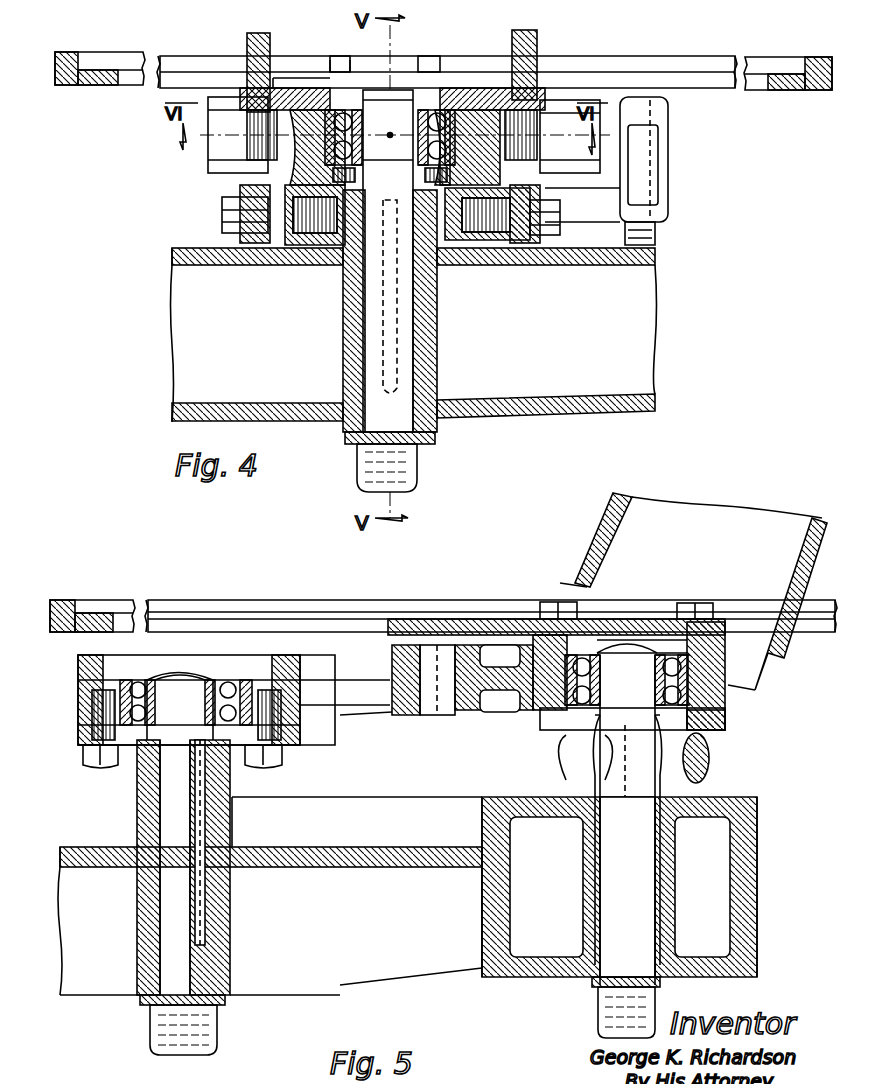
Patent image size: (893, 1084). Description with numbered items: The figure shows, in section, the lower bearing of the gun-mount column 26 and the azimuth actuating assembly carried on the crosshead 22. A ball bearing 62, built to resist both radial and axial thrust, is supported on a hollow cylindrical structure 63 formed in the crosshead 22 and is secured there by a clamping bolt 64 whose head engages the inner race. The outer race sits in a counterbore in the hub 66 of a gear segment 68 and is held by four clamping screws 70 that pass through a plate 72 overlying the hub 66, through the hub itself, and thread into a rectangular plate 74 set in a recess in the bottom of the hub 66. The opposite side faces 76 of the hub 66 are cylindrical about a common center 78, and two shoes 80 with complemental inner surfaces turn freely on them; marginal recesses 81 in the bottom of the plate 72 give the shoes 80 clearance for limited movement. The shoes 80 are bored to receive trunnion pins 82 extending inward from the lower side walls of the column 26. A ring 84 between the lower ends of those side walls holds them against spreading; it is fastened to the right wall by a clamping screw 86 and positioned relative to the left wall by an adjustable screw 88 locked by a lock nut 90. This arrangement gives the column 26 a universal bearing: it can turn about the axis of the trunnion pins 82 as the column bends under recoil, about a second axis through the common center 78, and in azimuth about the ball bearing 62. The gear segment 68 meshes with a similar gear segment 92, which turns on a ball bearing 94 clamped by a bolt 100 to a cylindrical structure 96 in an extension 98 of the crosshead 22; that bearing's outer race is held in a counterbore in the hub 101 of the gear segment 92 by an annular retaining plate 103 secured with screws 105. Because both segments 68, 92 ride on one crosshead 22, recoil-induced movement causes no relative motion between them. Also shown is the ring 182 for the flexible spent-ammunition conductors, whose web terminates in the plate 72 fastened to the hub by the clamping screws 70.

In FIG. 4, the crosshead 22 is at (414, 335).
In FIG. 5, the crosshead 22 is at (757, 862).
In FIG. 4, the column 26 is at (250, 30).
In FIG. 5, the column 26 is at (693, 591).
In FIG. 4, the ball bearing 62 is at (343, 113).
In FIG. 5, the ball bearing 62 is at (582, 657).
In FIG. 4, the hollow cylindrical structure 63 is at (343, 338).
In FIG. 4, the clamping bolt 64 is at (400, 95).
In FIG. 5, the clamping bolt 64 is at (627, 814).
In FIG. 4, the hub 66 is at (455, 98).
In FIG. 5, the hub 66 is at (545, 640).
In FIG. 5, the gear segment 68 is at (438, 715).
In FIG. 4, the clamping screws 70 is at (335, 56).
In FIG. 5, the clamping screws 70 is at (550, 603).
In FIG. 4, the plate 72 is at (305, 110).
In FIG. 5, the plate 72 is at (712, 625).
In FIG. 4, the rectangular plate 74 is at (340, 248).
In FIG. 5, the rectangular plate 74 is at (715, 732).
In FIG. 4, the side faces 76 is at (242, 200).
In FIG. 4, the common center 78 is at (390, 135).
In FIG. 4, the shoes 80 is at (285, 98).
In FIG. 4, the marginal recesses 81 is at (283, 78).
In FIG. 4, the trunnion pins 82 is at (285, 147).
In FIG. 4, the ring 84 is at (490, 240).
In FIG. 5, the ring 84 is at (710, 765).
In FIG. 4, the clamping screw 86 is at (545, 225).
In FIG. 4, the screw 88 is at (228, 215).
In FIG. 4, the lock nut 90 is at (290, 240).
In FIG. 5, the gear segment 92 is at (395, 715).
In FIG. 5, the ball bearing 94 is at (228, 682).
In FIG. 5, the cylindrical structure 96 is at (138, 810).
In FIG. 5, the extension 98 is at (270, 921).
In FIG. 5, the bolt 100 is at (180, 834).
In FIG. 5, the hub 101 is at (335, 668).
In FIG. 5, the annular retaining plate 103 is at (282, 742).
In FIG. 5, the screws 105 is at (90, 758).
In FIG. 4, the ring 182 is at (800, 90).
In FIG. 5, the ring 182 is at (95, 613).